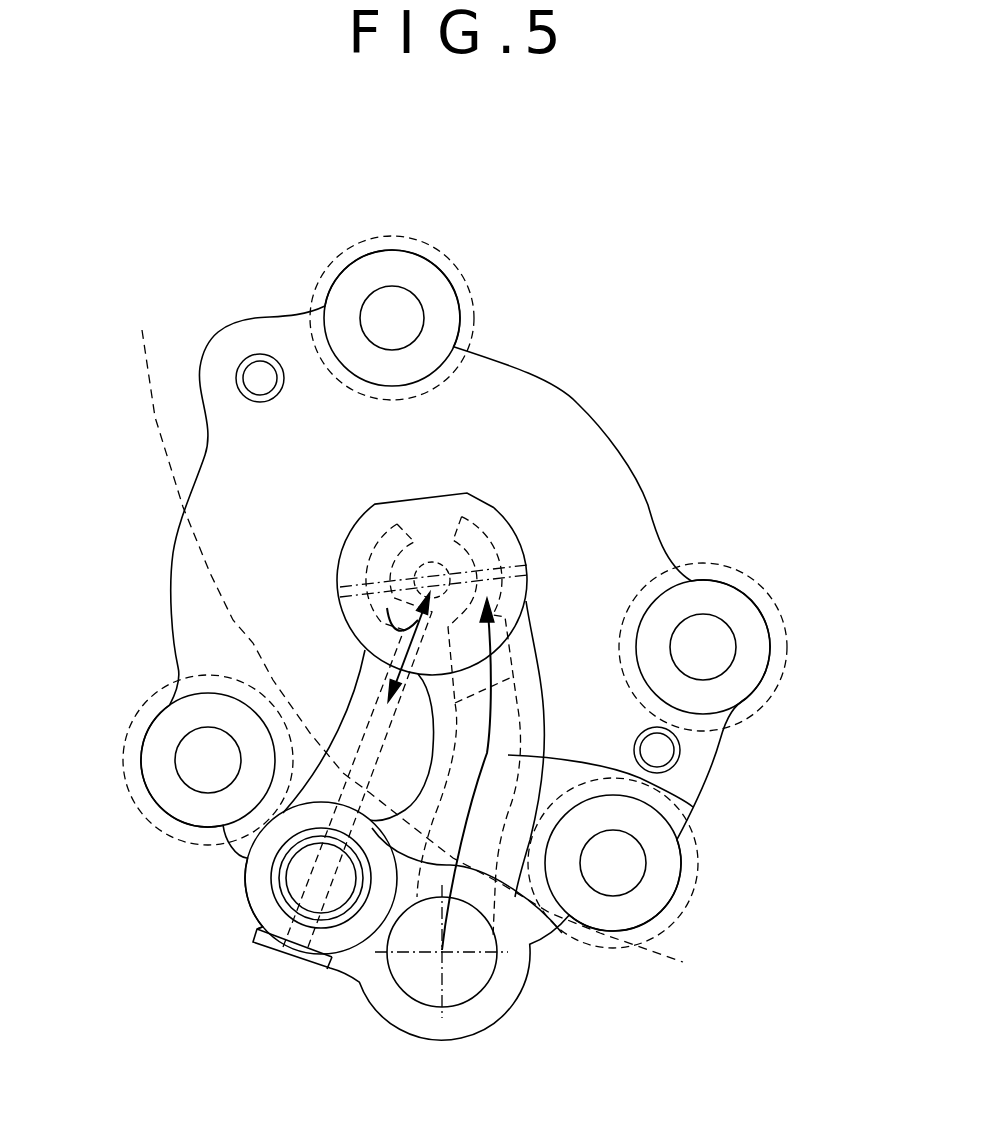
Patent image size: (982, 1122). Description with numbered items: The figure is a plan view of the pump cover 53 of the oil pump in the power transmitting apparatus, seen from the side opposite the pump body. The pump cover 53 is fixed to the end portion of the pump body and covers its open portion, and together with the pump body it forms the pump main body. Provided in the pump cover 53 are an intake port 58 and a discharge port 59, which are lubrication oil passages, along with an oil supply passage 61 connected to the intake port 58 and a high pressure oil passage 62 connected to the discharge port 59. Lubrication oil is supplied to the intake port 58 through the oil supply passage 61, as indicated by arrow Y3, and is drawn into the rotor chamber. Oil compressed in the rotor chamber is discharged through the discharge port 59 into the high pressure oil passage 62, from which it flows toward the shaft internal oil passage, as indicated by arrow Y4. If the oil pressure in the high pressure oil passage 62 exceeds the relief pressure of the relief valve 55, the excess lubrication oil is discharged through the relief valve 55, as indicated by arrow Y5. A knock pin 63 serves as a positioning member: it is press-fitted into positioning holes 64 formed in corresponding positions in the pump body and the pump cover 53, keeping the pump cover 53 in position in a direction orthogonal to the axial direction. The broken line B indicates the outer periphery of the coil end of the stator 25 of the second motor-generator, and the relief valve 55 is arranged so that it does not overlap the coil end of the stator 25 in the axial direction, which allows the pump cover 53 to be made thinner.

The stator 25 is at (147, 374).
The broken line B is at (150, 417).
The pump cover 53 is at (577, 403).
The relief valve 55 is at (267, 895).
The intake port 58 is at (473, 542).
The discharge port 59 is at (387, 545).
The oil supply passage 61 is at (680, 803).
The high pressure oil passage 62 is at (375, 727).
The knock pin 63 is at (255, 380).
The positioning holes 64 is at (263, 367).
The arrow Y3 is at (493, 713).
The arrow Y4 is at (420, 603).
The arrow Y5 is at (362, 667).